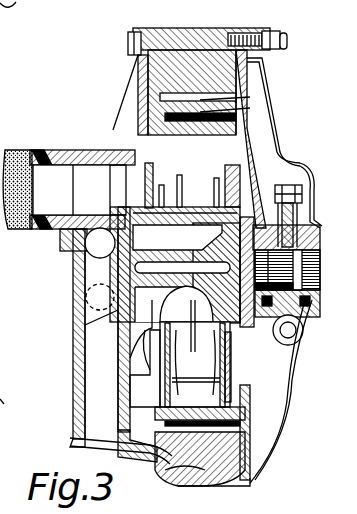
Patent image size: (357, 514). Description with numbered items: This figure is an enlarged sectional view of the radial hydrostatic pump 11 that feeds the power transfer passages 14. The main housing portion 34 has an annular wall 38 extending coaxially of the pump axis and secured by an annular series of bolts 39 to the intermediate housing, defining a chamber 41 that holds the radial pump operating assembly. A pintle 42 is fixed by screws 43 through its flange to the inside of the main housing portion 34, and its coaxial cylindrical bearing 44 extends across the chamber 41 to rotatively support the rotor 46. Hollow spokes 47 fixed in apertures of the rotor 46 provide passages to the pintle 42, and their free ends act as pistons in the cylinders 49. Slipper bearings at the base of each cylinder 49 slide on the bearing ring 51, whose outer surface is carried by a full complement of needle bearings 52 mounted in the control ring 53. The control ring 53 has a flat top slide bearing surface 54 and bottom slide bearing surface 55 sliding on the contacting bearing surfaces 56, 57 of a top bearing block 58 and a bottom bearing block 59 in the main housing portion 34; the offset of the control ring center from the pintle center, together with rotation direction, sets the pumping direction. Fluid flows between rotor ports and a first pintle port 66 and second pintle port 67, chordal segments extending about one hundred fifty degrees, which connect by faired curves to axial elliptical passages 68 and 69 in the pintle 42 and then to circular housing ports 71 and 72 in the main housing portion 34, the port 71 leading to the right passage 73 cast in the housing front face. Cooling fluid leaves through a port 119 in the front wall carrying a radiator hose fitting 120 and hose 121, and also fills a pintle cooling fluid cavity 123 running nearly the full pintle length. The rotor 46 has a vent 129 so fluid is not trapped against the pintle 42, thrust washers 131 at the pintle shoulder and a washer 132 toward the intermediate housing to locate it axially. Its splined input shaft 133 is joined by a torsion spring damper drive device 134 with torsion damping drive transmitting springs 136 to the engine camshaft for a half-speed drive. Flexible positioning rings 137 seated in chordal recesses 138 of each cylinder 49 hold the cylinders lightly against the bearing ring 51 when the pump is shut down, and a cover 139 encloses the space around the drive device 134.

The pump 11 is at (44, 128).
The power transfer passages 14 is at (66, 381).
The main housing portion 34 is at (147, 82).
The annular wall 38 is at (166, 28).
The bolts 39 is at (128, 48).
The chamber 41 is at (251, 139).
The pintle 42 is at (146, 168).
The screws 43 is at (161, 184).
The cylindrical bearing 44 is at (222, 170).
The rotor 46 is at (284, 194).
The hollow spokes 47 is at (223, 272).
The cylinders 49 is at (278, 300).
The bearing ring 51 is at (158, 412).
The needle bearings 52 is at (245, 117).
The control ring 53 is at (85, 437).
The top slide bearing surface 54 is at (182, 94).
The bottom slide bearing surface 55 is at (250, 450).
The contacting bearing surface 56 is at (248, 102).
The contacting bearing surface 57 is at (172, 450).
The top bearing block 58 is at (207, 78).
The bottom bearing block 59 is at (246, 480).
The first pintle port 66 is at (200, 214).
The second pintle port 67 is at (195, 353).
The axial elliptical passage 68 is at (183, 181).
The axial elliptical passage 69 is at (101, 334).
The housing port 71 is at (101, 228).
The housing port 72 is at (85, 300).
The right passage 73 is at (95, 321).
The port 119 is at (95, 165).
The radiator hose fitting 120 is at (58, 149).
The hose 121 is at (20, 228).
The pintle cooling fluid cavity 123 is at (118, 272).
The vent 129 is at (239, 367).
The thrust washers 131 is at (126, 364).
The washer 132 is at (302, 385).
The splined input shaft 133 is at (326, 240).
The torsion spring damper drive device 134 is at (291, 160).
The torsion damping drive transmitting springs 136 is at (293, 346).
The positioning rings 137 is at (232, 166).
The chordal recess 138 is at (144, 353).
The cover 139 is at (272, 63).